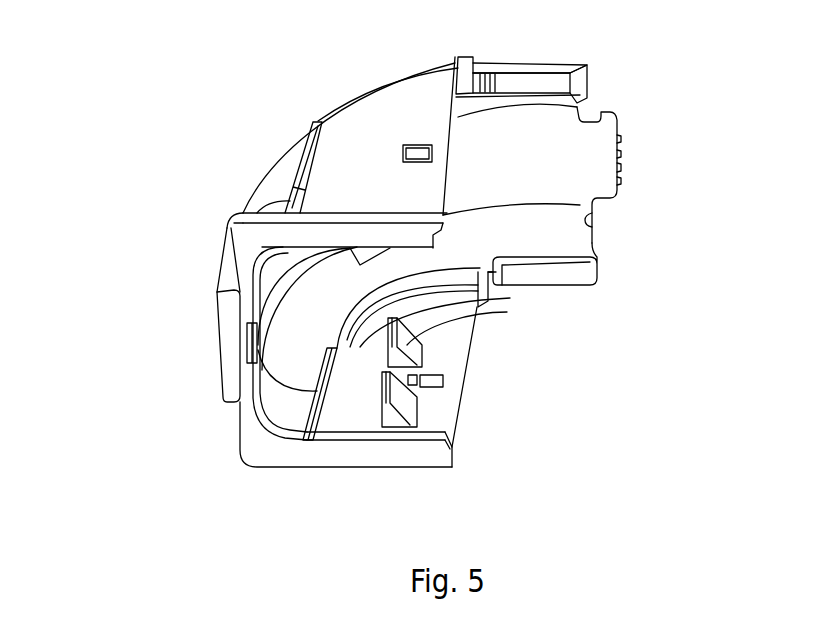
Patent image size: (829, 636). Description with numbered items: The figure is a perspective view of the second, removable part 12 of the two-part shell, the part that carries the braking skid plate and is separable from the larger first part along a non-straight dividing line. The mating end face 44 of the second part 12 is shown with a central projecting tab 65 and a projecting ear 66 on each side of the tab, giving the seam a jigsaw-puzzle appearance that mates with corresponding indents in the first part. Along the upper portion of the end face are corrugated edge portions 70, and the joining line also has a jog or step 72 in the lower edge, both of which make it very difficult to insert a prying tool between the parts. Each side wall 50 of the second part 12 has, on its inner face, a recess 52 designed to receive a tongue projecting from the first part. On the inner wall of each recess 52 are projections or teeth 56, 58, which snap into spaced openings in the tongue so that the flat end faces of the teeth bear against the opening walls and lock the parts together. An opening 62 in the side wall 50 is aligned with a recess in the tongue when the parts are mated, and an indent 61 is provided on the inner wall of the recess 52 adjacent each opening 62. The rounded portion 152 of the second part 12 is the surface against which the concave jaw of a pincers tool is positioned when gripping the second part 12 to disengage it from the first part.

The second part 12 is at (385, 133).
The rounded portion 152 is at (272, 168).
The opening 62 is at (413, 145).
The corrugated edge portions 70 is at (587, 93).
The central projecting tab 65 is at (603, 142).
The projecting ear 66 is at (583, 243).
The tooth 56 is at (413, 340).
The indent 61 is at (416, 375).
The mating end face 44 is at (467, 382).
The tooth 58 is at (402, 398).
The jog or step 72 is at (452, 448).
The recess 52 is at (344, 441).
The side wall 50 is at (425, 423).